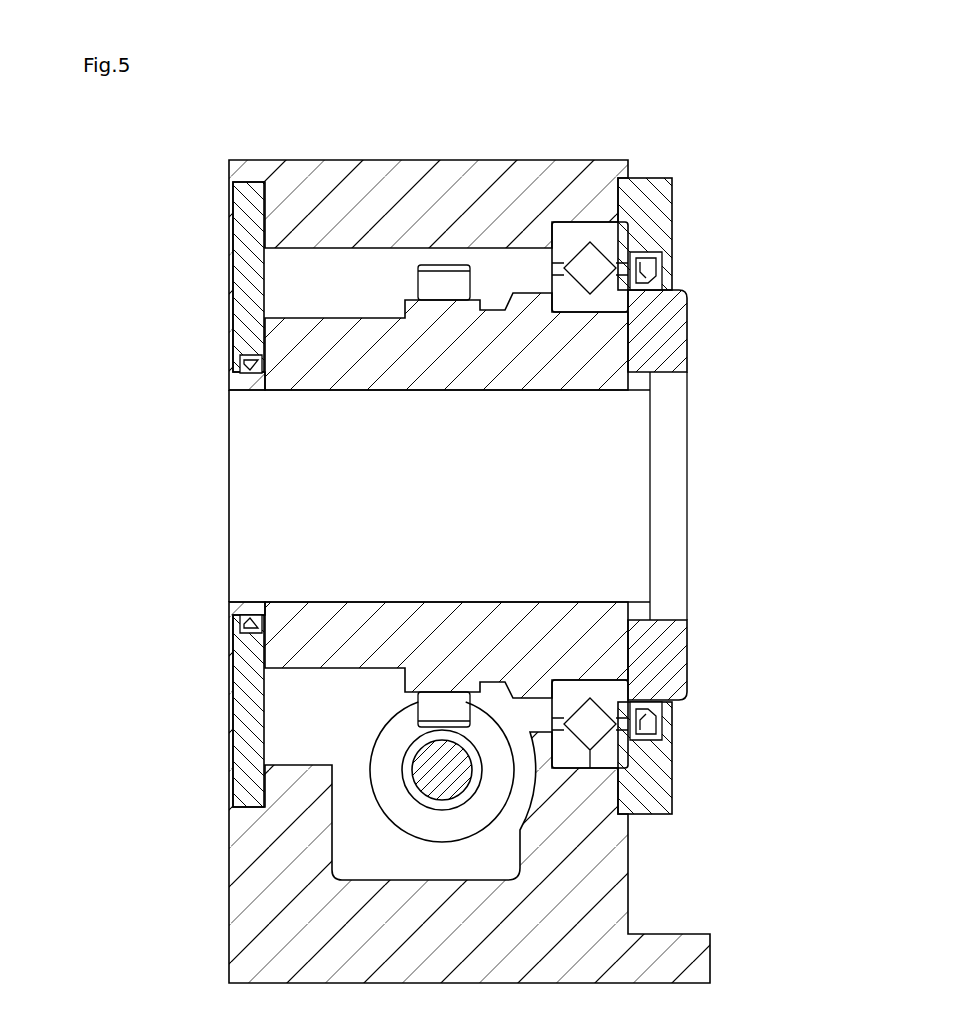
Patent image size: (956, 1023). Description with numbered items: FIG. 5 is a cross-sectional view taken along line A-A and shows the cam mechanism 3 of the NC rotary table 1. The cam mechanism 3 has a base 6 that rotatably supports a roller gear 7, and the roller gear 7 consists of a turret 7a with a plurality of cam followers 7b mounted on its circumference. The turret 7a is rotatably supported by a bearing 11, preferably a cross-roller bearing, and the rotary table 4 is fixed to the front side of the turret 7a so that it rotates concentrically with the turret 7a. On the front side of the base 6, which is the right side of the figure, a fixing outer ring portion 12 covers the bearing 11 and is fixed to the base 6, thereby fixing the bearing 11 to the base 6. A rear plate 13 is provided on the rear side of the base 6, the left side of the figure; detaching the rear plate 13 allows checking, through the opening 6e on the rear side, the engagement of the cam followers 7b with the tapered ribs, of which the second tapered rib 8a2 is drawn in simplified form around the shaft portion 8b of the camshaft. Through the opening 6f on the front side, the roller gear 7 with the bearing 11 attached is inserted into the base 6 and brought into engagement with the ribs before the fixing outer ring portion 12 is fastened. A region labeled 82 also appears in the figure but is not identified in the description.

The NC rotary table 1 is at (788, 125).
The cam mechanism 3 is at (182, 553).
The rotary table 4 is at (682, 338).
The base 6 is at (302, 172).
The opening 6e is at (215, 496).
The opening 6f is at (697, 494).
The roller gear 7 is at (446, 420).
The turret 7a is at (303, 322).
The cam followers 7b is at (450, 282).
The second tapered rib 8a2 is at (398, 810).
The shaft portion 8b is at (456, 781).
The bearing 11 is at (582, 240).
The fixing outer ring portion 12 is at (667, 223).
The rear plate 13 is at (242, 283).
The accommodating space 82 is at (358, 756).